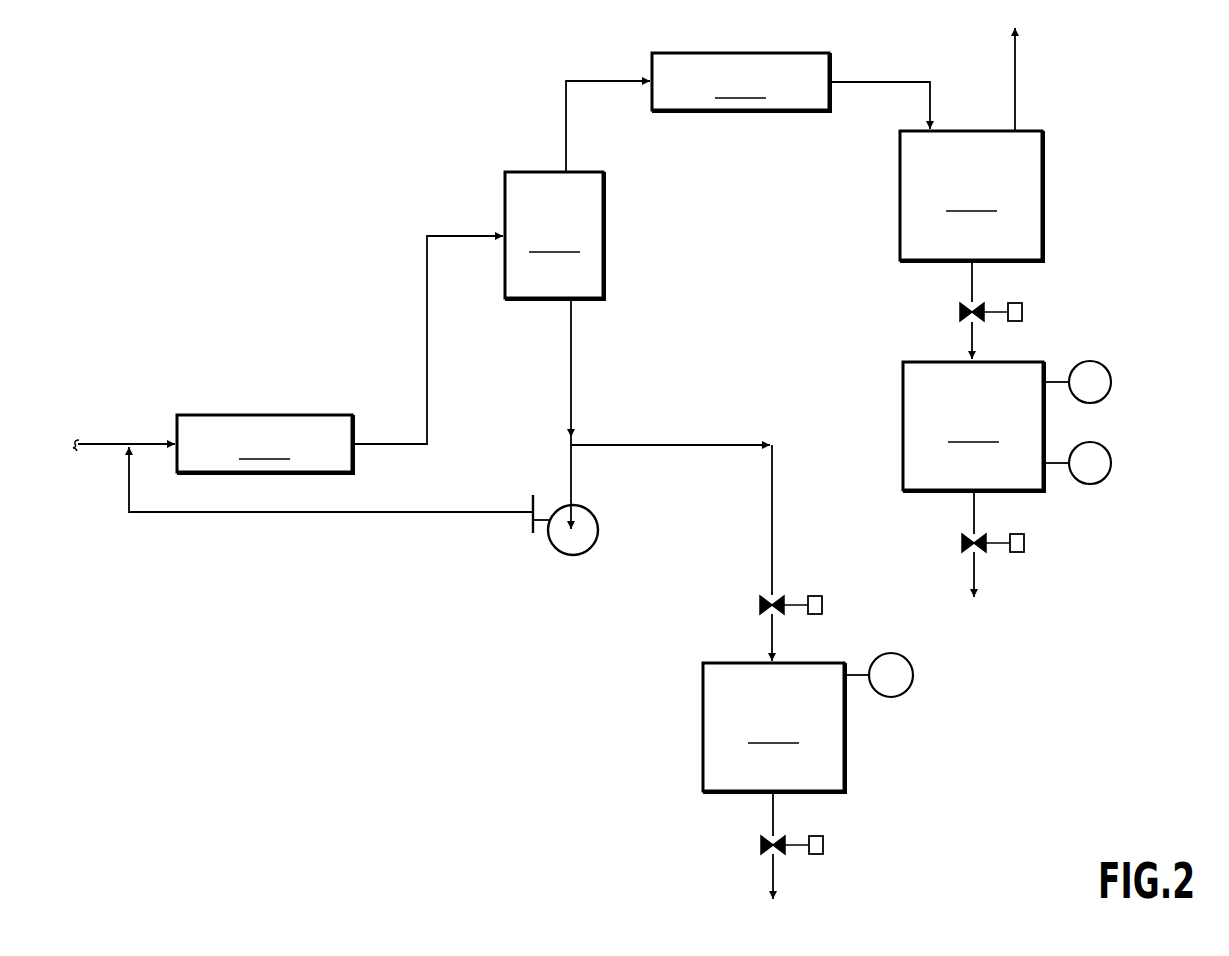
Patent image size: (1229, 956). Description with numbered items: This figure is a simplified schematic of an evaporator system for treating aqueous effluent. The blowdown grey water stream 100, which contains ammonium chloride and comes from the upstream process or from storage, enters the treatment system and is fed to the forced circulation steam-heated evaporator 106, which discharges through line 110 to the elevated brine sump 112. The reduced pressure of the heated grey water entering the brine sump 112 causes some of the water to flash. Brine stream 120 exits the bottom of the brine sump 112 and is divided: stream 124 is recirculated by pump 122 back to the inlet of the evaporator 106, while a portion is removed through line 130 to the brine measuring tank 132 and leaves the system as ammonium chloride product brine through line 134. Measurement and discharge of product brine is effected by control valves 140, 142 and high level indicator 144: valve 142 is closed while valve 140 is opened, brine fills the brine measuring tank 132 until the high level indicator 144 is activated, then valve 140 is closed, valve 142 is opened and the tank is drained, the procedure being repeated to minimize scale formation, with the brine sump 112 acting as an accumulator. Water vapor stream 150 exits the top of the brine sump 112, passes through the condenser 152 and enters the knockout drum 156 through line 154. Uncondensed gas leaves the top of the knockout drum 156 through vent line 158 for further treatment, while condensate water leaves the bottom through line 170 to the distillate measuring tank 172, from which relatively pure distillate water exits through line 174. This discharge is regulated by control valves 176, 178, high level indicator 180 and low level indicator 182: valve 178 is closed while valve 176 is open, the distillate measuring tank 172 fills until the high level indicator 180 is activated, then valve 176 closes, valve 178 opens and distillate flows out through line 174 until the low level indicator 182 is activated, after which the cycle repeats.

The blowdown grey water stream 100 is at (98, 443).
The forced circulation steam-heated evaporator 106 is at (265, 444).
The line 110 is at (427, 342).
The elevated brine sump 112 is at (555, 236).
The brine stream 120 is at (571, 365).
The pump 122 is at (571, 555).
The recirculated brine stream 124 is at (255, 514).
The line 130 is at (770, 522).
The brine measuring tank 132 is at (774, 728).
The product brine line 134 is at (777, 863).
The control valve 140 is at (758, 605).
The control valve 142 is at (762, 843).
The high level indicator 144 is at (898, 694).
The water vapor stream 150 is at (565, 118).
The condenser 152 is at (741, 82).
The line 154 is at (885, 82).
The knockout drum 156 is at (972, 196).
The vent line 158 is at (1015, 95).
The line 170 is at (973, 275).
The distillate measuring tank 172 is at (974, 427).
The line 174 is at (977, 563).
The control valve 176 is at (960, 310).
The control valve 178 is at (962, 540).
The high level indicator 180 is at (1103, 365).
The low level indicator 182 is at (1103, 445).